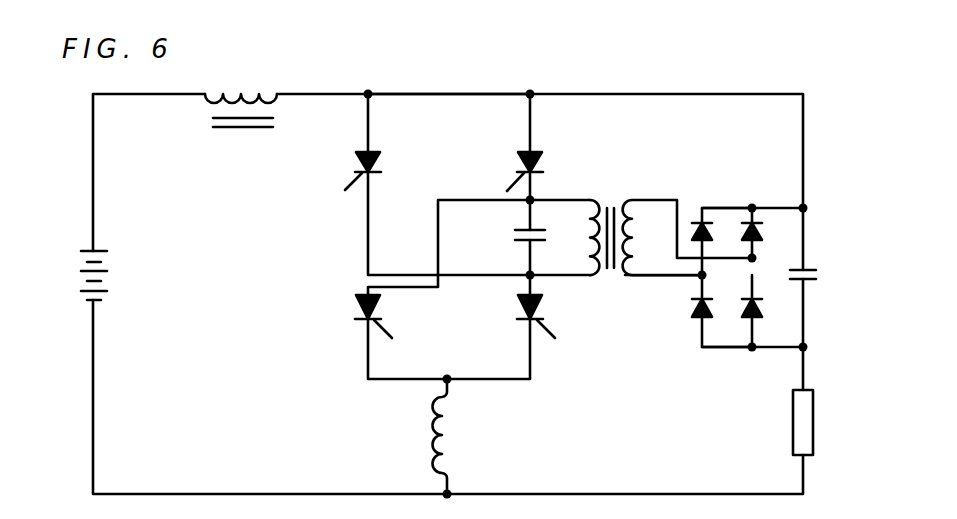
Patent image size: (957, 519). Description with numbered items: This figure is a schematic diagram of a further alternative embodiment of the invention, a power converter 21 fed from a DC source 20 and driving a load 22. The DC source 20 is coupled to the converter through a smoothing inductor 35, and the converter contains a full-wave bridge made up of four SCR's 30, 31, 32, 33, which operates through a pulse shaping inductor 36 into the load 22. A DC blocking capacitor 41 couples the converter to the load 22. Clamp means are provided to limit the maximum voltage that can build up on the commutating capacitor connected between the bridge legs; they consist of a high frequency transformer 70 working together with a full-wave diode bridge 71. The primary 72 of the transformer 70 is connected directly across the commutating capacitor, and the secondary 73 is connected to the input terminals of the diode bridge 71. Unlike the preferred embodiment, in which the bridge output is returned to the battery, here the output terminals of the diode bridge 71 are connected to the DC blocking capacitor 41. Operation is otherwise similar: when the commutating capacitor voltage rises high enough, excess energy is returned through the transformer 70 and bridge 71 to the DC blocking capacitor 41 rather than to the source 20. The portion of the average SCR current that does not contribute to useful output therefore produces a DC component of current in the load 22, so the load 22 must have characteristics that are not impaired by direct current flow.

The DC source 20 is at (72, 268).
The power converter 21 is at (484, 80).
The load 22 is at (815, 421).
The SCR 30 is at (541, 150).
The SCR 31 is at (545, 305).
The SCR 32 is at (354, 154).
The SCR 33 is at (352, 307).
The smoothing inductor 35 is at (238, 70).
The pulse shaping inductor 36 is at (426, 416).
The DC blocking capacitor 41 is at (820, 279).
The high frequency transformer 70 is at (660, 209).
The full-wave diode bridge 71 is at (734, 296).
The primary 72 is at (592, 205).
The secondary 73 is at (614, 202).